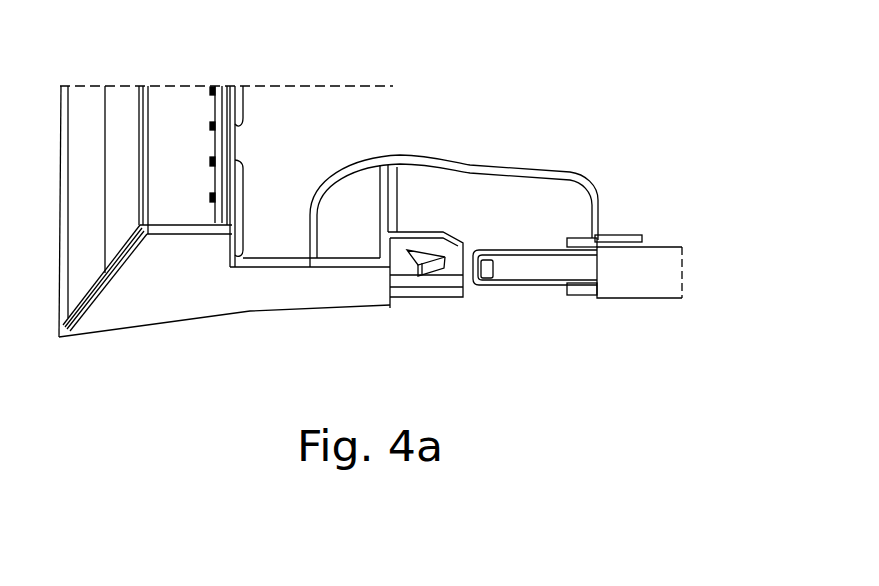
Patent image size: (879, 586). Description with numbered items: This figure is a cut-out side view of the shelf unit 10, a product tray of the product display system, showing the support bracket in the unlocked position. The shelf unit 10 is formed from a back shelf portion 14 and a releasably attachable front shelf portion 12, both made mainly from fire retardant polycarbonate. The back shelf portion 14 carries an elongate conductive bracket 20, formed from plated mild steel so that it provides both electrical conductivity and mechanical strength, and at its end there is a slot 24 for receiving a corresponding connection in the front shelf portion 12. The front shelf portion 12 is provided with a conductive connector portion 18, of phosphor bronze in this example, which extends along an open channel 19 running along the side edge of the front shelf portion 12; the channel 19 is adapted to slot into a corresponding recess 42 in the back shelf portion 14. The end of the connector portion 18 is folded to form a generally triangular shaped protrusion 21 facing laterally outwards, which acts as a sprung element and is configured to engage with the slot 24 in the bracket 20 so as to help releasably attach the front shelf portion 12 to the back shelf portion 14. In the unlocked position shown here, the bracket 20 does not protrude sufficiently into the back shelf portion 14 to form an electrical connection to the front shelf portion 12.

The shelf unit 10 is at (465, 113).
The front shelf portion 12 is at (163, 322).
The back shelf portion 14 is at (640, 298).
The connector portion 18 is at (414, 287).
The channel 19 is at (455, 232).
The conductive bracket 20 is at (528, 265).
The triangular shaped protrusion 21 is at (445, 272).
The slot 24 is at (486, 278).
The recess 42 is at (625, 234).